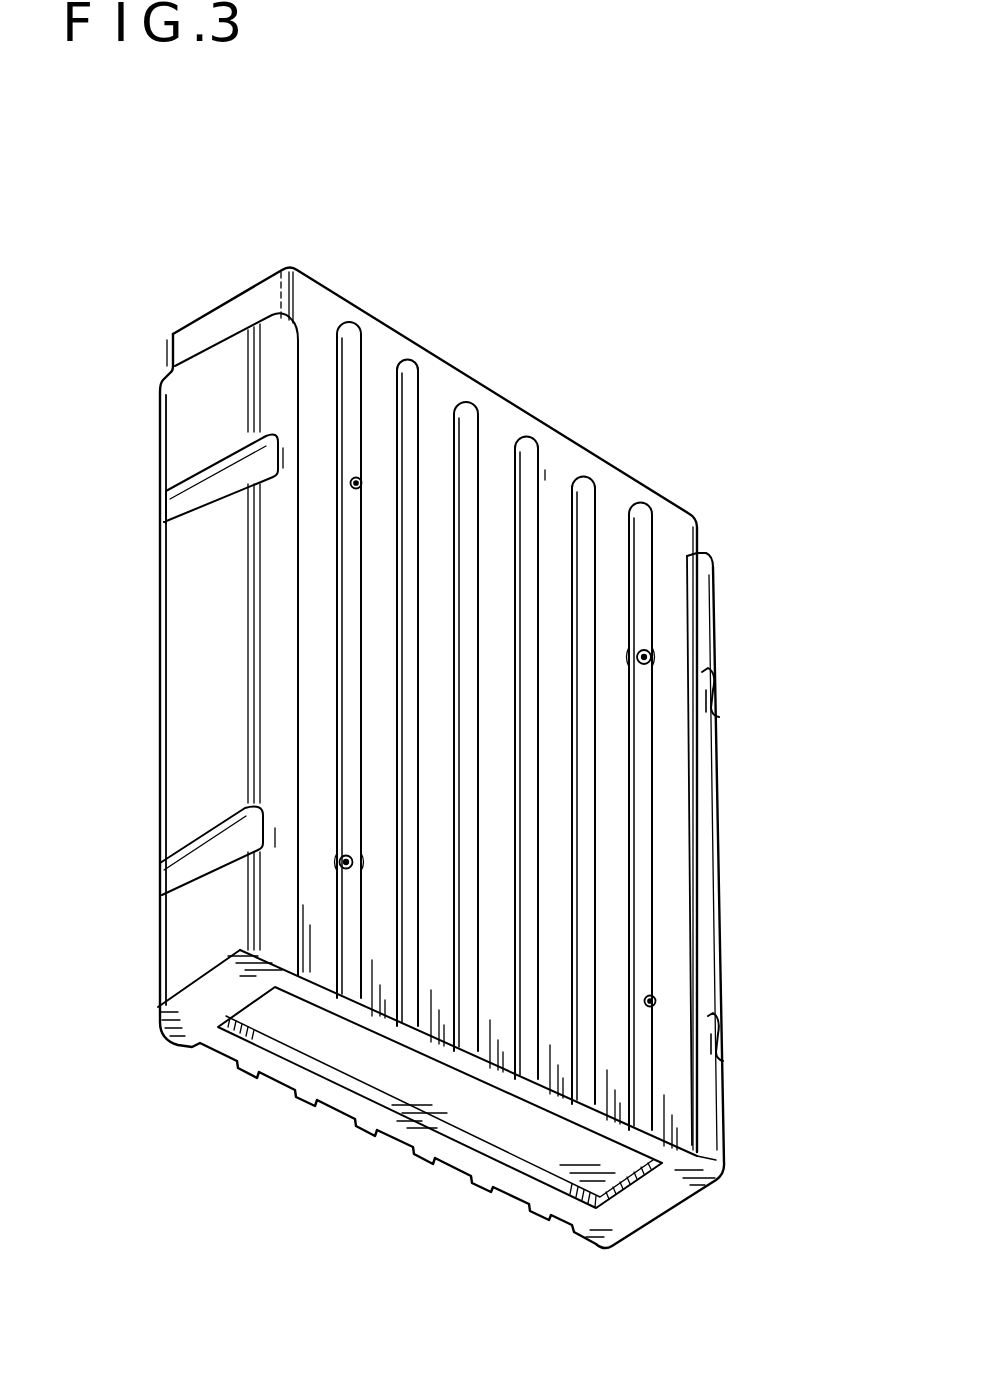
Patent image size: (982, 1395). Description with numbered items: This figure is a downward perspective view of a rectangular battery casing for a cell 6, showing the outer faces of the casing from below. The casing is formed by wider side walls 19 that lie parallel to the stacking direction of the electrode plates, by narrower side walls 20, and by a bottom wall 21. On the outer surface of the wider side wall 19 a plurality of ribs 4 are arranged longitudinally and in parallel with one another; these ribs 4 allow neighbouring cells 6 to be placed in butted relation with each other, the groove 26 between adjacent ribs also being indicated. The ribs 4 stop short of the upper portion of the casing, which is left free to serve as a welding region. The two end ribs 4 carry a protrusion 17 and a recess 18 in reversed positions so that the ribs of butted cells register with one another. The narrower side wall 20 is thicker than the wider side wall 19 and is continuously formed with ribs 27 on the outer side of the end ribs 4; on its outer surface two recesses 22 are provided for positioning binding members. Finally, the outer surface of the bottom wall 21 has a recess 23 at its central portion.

The ribs 4 is at (410, 396).
The cells 6 is at (708, 472).
The protrusion 17 is at (350, 484).
The recess 18 is at (338, 862).
The wider side wall 19 is at (672, 830).
The narrower side wall 20 is at (178, 700).
The bottom wall 21 is at (630, 1215).
The recess 22 is at (200, 500).
The recess 23 is at (483, 1114).
The groove 26 is at (547, 440).
The ribs 27 is at (272, 672).